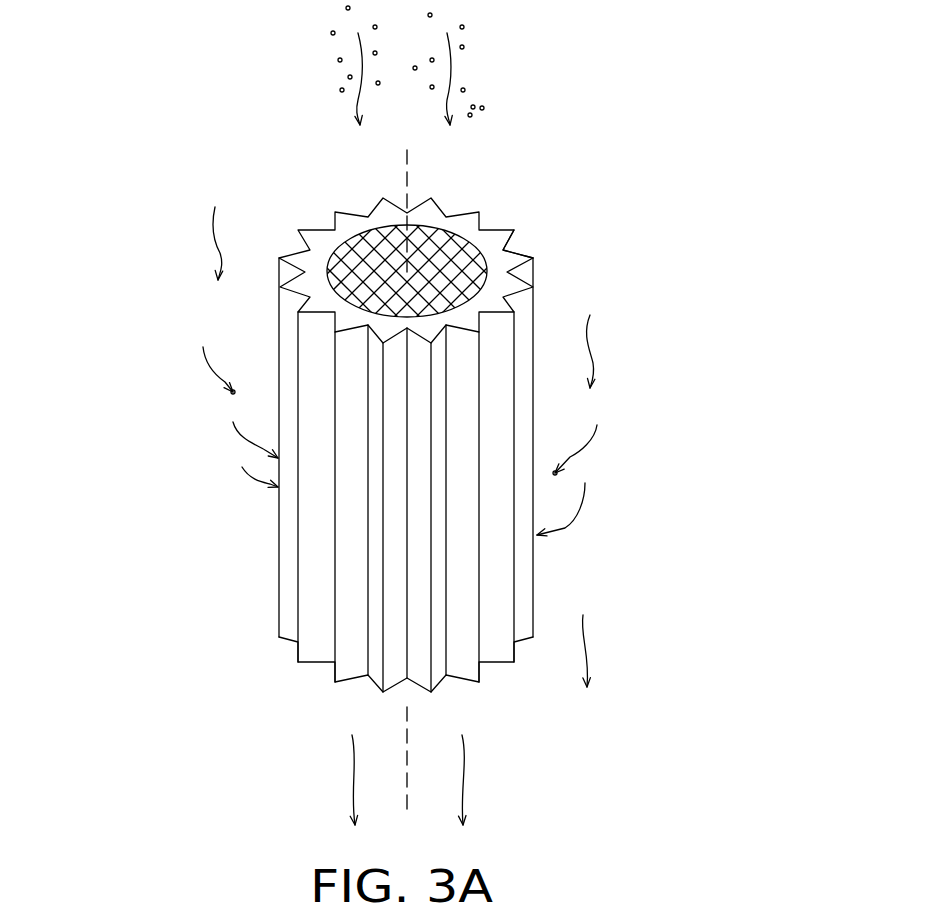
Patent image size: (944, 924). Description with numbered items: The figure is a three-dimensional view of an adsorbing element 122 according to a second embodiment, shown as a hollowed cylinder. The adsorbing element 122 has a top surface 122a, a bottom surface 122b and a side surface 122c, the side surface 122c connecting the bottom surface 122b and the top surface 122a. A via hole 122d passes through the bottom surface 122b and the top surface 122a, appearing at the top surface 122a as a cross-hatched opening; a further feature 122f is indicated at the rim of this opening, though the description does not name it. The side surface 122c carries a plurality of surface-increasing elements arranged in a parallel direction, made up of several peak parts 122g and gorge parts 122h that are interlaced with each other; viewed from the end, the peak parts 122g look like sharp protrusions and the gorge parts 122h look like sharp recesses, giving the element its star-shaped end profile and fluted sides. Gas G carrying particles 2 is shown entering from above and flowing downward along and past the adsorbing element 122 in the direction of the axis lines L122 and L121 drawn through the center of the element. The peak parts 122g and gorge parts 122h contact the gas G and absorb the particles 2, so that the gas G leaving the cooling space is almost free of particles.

The adsorbing element 122 is at (787, 690).
The gorge parts 122h is at (479, 228).
The peak parts 122g is at (503, 252).
The inlet opening 122f is at (333, 277).
The via hole 122d is at (336, 277).
The top surface 122a is at (497, 275).
The side surface 122c is at (280, 557).
The bottom surface 122b is at (495, 672).
The particles 2 is at (537, 538).
The gas G is at (419, 415).
The upstream axis line L122 is at (410, 191).
The downstream axis line L121 is at (416, 778).